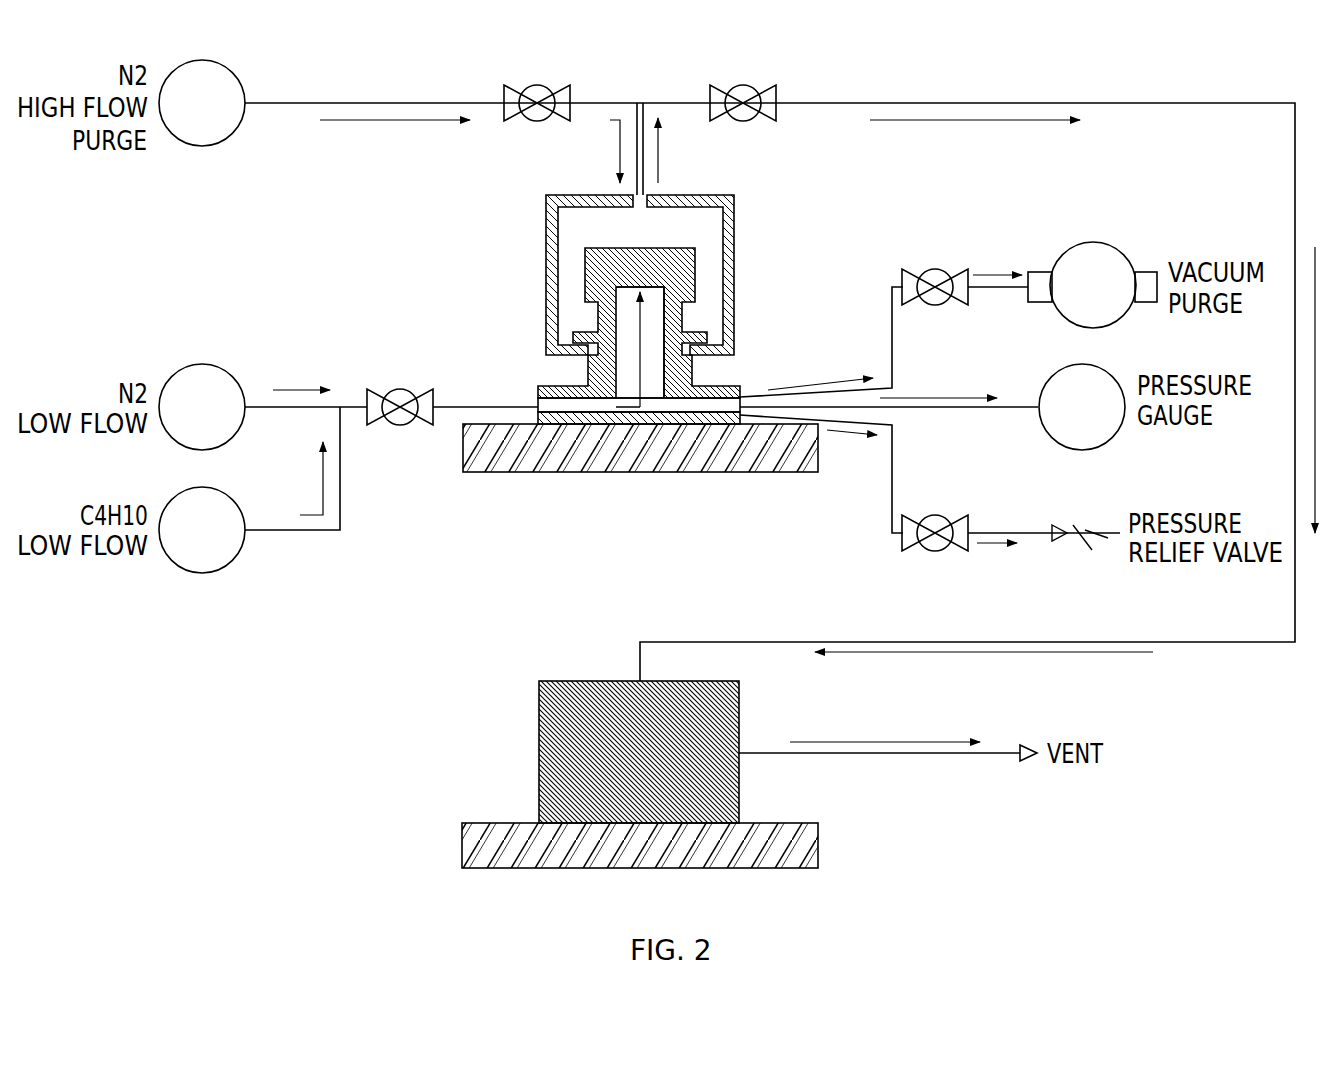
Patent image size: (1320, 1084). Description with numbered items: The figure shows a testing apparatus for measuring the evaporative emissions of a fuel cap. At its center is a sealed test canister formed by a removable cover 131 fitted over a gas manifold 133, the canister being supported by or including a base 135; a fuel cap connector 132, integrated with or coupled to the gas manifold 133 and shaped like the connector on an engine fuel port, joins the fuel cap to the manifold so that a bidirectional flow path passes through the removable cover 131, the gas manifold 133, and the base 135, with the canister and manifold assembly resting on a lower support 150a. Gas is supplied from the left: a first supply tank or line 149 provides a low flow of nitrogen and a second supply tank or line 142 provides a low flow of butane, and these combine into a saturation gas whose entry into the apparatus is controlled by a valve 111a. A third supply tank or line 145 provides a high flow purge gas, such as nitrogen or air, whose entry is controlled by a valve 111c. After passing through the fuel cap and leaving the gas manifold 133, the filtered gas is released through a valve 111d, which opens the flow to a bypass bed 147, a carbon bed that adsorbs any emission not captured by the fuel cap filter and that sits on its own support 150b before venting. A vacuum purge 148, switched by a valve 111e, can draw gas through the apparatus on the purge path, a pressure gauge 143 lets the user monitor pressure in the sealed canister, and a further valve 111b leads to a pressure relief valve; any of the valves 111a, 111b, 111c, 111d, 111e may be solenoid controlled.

The third supply tank or line 145 is at (222, 83).
The first supply tank or line 149 is at (215, 363).
The second supply tank or line 142 is at (225, 492).
The valve 111a is at (412, 398).
The valve 111b is at (910, 525).
The valve 111c is at (543, 98).
The valve 111d is at (755, 98).
The valve 111e is at (915, 283).
The removable cover 131 is at (700, 188).
The fuel cap connector 132 is at (597, 302).
The gas manifold 133 is at (735, 280).
The base 135 is at (730, 348).
The pressure gauge 143 is at (1072, 370).
The vacuum purge 148 is at (1100, 242).
The bypass bed 147 is at (723, 725).
The support stage 150a is at (702, 476).
The support stage 150b is at (820, 842).